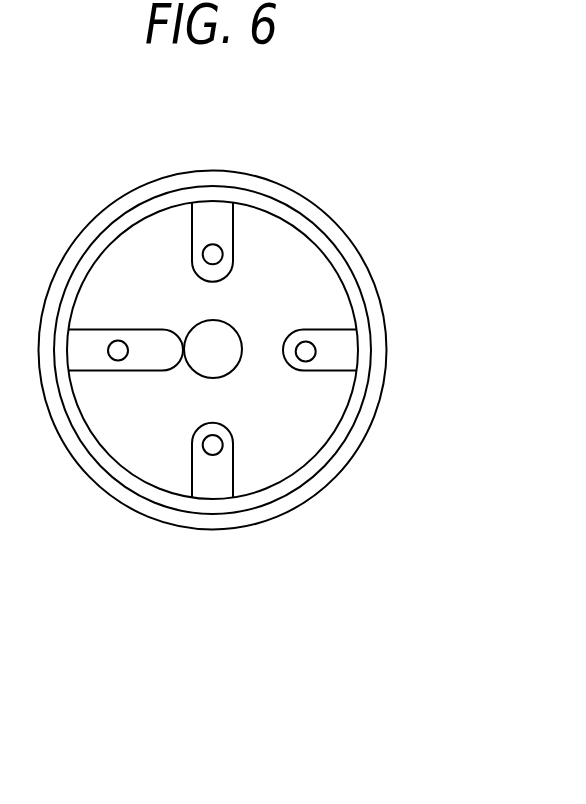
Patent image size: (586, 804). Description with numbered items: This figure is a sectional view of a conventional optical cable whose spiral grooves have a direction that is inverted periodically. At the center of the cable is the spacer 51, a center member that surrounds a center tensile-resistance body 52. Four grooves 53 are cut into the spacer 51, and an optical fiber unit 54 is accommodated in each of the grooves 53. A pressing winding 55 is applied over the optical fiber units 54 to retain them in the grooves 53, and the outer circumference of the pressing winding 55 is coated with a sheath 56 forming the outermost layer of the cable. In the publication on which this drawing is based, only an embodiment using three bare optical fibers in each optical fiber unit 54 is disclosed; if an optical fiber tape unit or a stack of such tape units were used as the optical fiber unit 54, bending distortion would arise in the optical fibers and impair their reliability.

The spacer 51 is at (278, 247).
The center tensile-resistance body 52 is at (232, 372).
The grooves 53 is at (343, 367).
The optical fiber units 54 is at (315, 342).
The pressing winding 55 is at (347, 426).
The sheath 56 is at (352, 240).